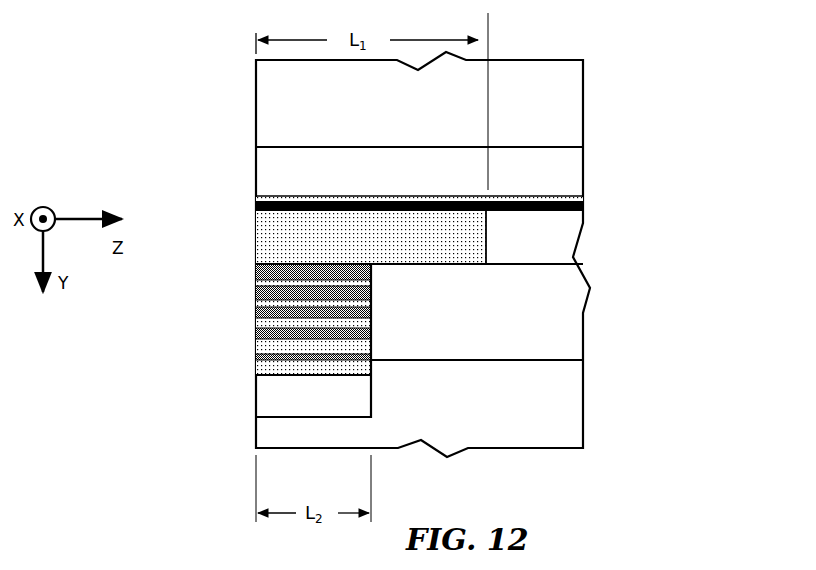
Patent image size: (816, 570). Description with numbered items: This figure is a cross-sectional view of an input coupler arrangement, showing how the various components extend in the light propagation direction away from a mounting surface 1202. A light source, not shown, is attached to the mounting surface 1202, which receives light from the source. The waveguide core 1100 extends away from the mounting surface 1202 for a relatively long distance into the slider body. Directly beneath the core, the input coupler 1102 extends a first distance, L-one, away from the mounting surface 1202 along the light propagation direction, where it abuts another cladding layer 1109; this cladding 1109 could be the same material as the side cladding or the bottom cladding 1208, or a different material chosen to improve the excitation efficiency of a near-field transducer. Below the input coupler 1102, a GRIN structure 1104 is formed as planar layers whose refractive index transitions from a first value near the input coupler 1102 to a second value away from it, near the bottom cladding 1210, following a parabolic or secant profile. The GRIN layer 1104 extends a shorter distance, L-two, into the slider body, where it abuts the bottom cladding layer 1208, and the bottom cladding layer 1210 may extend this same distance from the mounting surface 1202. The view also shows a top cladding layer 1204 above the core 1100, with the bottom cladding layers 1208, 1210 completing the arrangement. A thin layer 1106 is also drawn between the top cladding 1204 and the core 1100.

The mounting surface 1202 is at (256, 52).
The top cladding layer 1204 is at (388, 152).
The thin layer 1106 is at (585, 201).
The waveguide core 1100 is at (256, 206).
The input coupler 1102 is at (262, 235).
The cladding layer 1109 is at (575, 245).
The GRIN structure 1104 is at (248, 266).
The bottom cladding layer 1208 is at (496, 352).
The bottom cladding layer 1210 is at (371, 398).